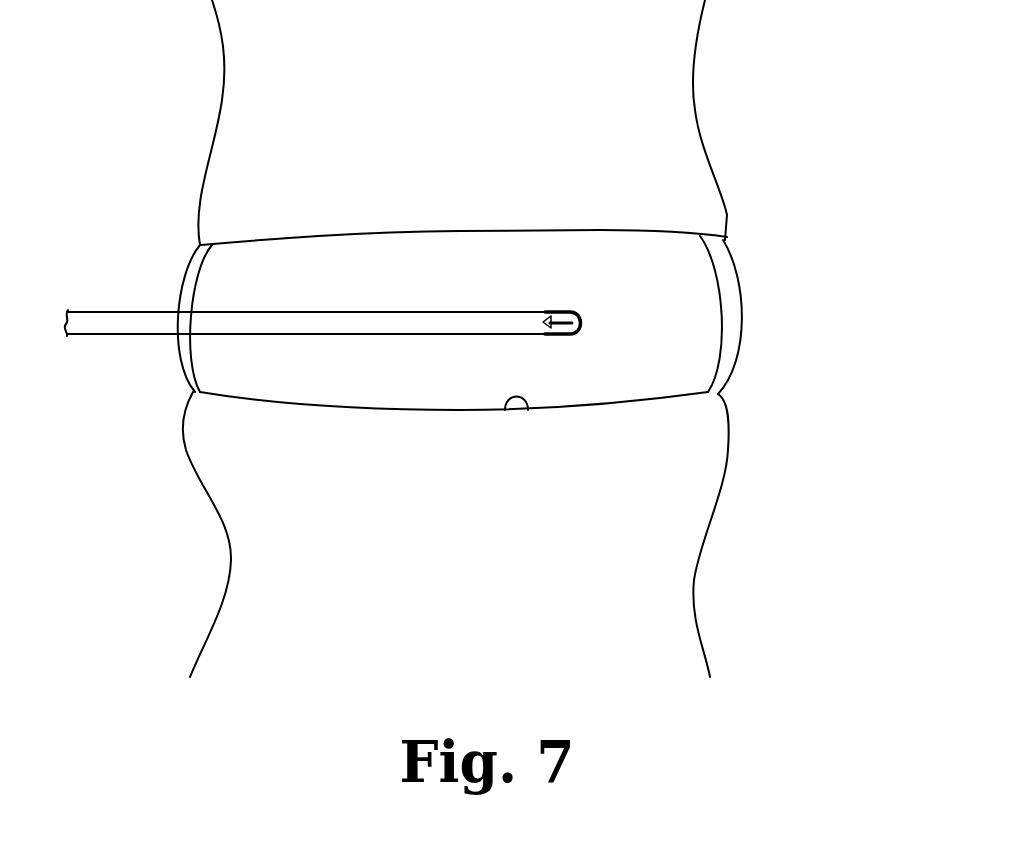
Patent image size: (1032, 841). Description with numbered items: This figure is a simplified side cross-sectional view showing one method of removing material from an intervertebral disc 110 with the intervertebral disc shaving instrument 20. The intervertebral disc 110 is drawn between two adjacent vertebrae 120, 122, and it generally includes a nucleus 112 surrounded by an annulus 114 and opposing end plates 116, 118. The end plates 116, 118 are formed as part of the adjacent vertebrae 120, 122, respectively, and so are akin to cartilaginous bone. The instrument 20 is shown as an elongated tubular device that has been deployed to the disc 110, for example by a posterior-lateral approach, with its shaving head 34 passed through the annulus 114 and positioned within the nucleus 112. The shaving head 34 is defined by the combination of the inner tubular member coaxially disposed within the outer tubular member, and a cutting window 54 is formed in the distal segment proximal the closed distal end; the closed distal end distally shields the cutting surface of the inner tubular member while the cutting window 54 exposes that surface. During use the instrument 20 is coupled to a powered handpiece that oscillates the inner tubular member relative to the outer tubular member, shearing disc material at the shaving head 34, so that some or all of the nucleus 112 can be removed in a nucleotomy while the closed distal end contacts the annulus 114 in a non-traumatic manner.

The intervertebral disc shaving instrument 20 is at (341, 310).
The bodily material shaving head 34 is at (574, 342).
The cutting window 54 is at (548, 314).
The intervertebral disc 110 is at (552, 325).
The nucleus 112 is at (684, 344).
The annulus 114 is at (734, 256).
The end plate 116 is at (523, 230).
The end plate 118 is at (506, 410).
The vertebra 120 is at (683, 108).
The vertebra 122 is at (672, 557).